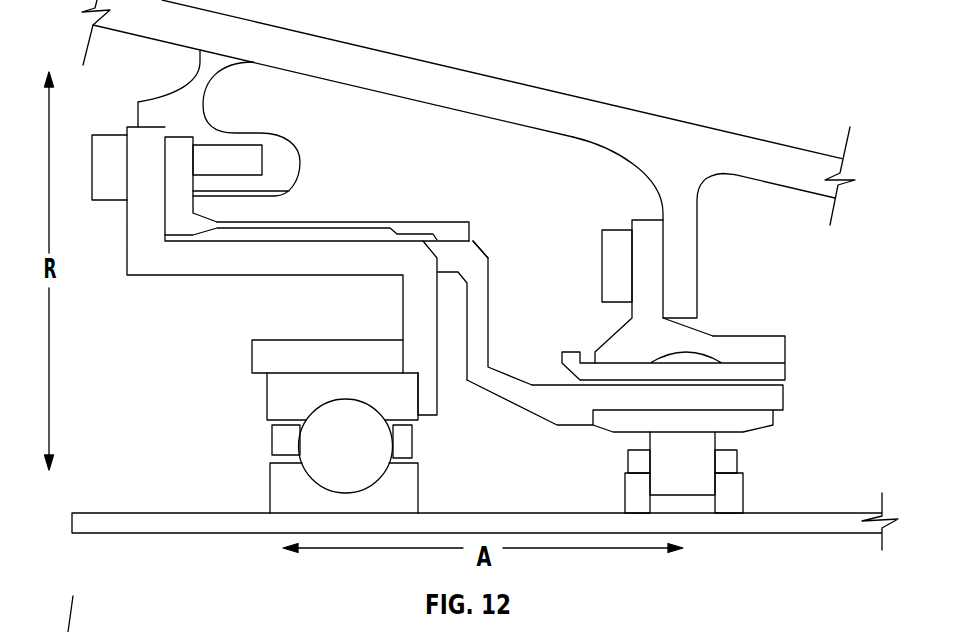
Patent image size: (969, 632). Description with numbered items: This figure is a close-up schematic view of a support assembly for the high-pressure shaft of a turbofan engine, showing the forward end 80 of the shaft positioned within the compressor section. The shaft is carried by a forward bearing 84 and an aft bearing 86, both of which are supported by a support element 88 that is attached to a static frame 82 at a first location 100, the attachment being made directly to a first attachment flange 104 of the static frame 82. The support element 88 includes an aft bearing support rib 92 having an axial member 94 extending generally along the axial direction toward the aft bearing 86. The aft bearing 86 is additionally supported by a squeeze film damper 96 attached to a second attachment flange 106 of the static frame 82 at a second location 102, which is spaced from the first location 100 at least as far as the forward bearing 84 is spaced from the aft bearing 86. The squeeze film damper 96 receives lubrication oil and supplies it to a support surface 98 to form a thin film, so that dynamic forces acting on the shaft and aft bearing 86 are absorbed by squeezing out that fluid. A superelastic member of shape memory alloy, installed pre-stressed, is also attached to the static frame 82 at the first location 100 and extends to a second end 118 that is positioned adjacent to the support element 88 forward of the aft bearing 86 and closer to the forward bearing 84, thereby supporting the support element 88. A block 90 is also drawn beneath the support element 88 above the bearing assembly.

The forward end 80 is at (225, 543).
The static frame 82 is at (487, 77).
The forward bearing 84 is at (267, 447).
The aft bearing 86 is at (770, 473).
The support element 88 is at (413, 182).
The block 90 is at (378, 340).
The aft bearing support rib 92 is at (482, 300).
The axial member 94 is at (573, 408).
The squeeze film damper 96 is at (763, 345).
The support surface 98 is at (758, 383).
The first location 100 is at (310, 105).
The second location 102 is at (528, 247).
The first attachment flange 104 is at (172, 107).
The second attachment flange 106 is at (678, 217).
The second end 118 is at (436, 218).